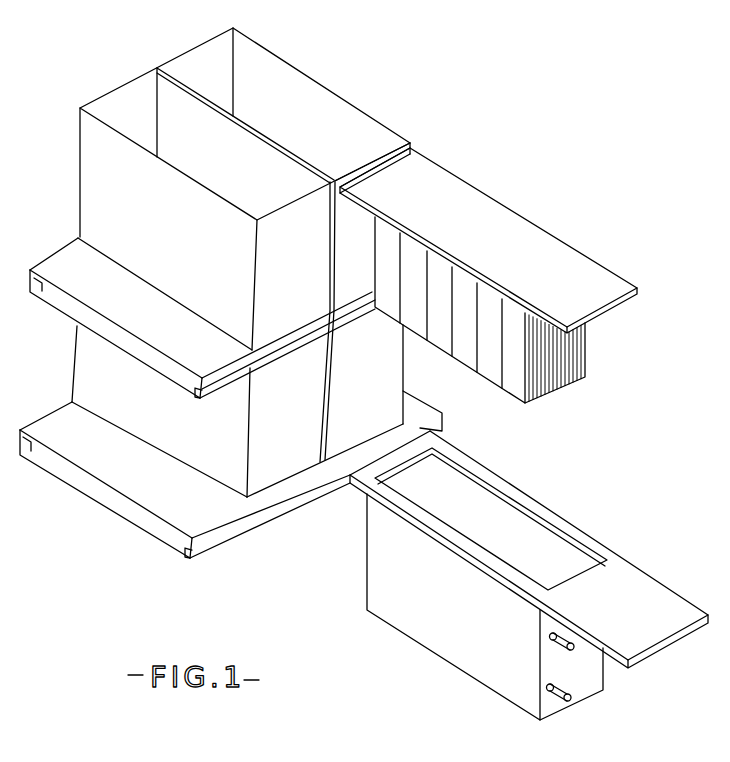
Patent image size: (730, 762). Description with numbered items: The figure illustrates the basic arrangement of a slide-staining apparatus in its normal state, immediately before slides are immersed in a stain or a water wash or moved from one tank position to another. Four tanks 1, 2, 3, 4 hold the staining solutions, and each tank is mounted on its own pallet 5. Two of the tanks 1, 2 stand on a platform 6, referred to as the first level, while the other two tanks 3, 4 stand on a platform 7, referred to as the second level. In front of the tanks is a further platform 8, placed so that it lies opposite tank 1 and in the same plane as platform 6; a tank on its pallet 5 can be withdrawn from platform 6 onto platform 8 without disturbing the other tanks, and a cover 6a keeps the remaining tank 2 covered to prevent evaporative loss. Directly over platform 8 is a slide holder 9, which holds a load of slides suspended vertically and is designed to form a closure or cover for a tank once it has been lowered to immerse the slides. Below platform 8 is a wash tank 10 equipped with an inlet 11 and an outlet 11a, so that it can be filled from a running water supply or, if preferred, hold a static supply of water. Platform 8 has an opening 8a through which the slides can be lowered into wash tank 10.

The tank 1 is at (390, 362).
The tank 2 is at (273, 473).
The tank 3 is at (280, 220).
The tank 4 is at (392, 144).
The pallet 5 is at (88, 247).
The platform 6 is at (177, 517).
The cover 6a is at (183, 392).
The platform 7 is at (187, 360).
The platform 8 is at (685, 610).
The opening 8a is at (570, 557).
The slide holder 9 is at (589, 266).
The wash tank 10 is at (440, 635).
The inlet 11 is at (551, 647).
The outlet 11a is at (557, 698).